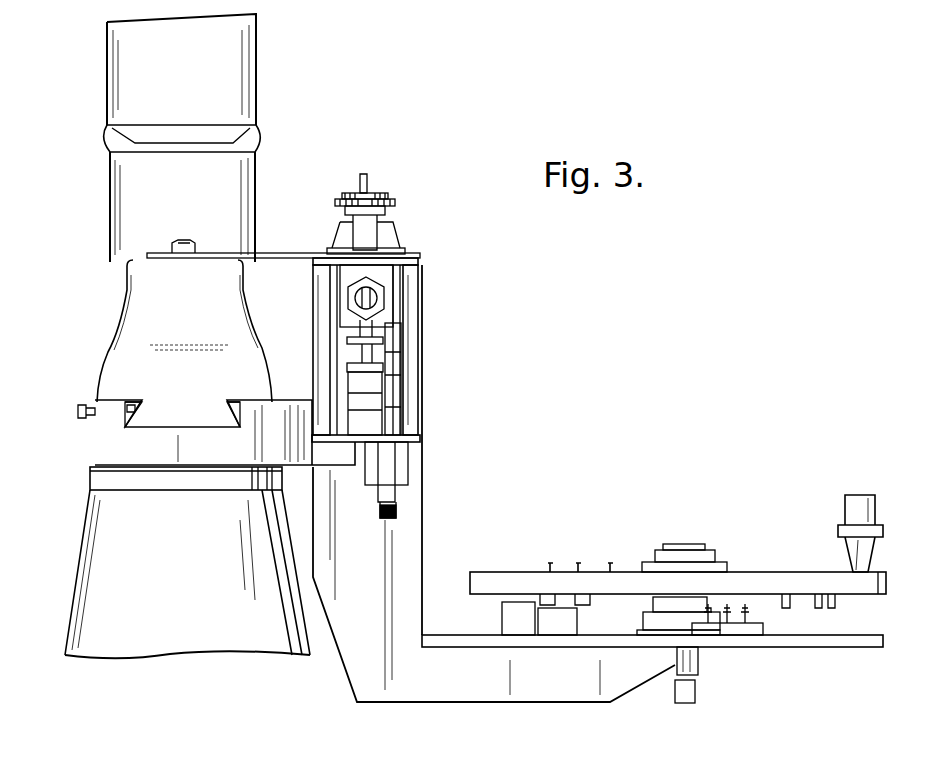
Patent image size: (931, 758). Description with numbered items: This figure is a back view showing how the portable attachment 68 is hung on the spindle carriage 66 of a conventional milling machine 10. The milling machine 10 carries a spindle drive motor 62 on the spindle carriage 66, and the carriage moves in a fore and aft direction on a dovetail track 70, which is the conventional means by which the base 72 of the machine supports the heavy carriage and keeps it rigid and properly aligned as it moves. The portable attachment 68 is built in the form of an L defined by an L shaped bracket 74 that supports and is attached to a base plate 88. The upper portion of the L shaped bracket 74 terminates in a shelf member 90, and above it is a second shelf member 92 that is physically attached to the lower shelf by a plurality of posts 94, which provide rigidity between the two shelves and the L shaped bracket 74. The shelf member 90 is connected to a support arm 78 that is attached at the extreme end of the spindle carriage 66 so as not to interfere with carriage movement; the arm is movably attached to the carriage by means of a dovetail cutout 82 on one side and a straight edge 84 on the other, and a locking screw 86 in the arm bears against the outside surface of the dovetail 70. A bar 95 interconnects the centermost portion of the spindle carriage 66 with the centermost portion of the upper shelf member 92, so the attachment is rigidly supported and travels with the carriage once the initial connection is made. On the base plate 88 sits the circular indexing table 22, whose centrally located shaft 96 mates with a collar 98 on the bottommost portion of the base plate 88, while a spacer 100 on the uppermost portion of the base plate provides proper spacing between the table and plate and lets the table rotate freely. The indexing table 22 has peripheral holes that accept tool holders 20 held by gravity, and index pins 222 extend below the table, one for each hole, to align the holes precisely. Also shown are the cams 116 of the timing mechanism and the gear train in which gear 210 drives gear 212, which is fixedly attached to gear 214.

The milling machine 10 is at (108, 208).
The spindle drive motor 62 is at (107, 67).
The spindle carriage 66 is at (108, 358).
The bar 95 is at (286, 252).
The dovetail track 70 is at (230, 415).
The straight edge 84 is at (130, 405).
The dovetail cutout 82 is at (238, 405).
The support arm 78 is at (298, 400).
The locking screw 86 is at (80, 410).
The base 72 is at (85, 530).
The second shelf member 92 is at (420, 258).
The posts 94 is at (318, 322).
The shelf member 90 is at (420, 440).
The cams 116 is at (368, 182).
The gear 212 is at (352, 198).
The gear 214 is at (395, 200).
The gear 210 is at (392, 208).
The L shaped bracket 74 is at (423, 565).
The portable attachment 68 is at (432, 490).
The base plate 88 is at (825, 648).
The collar 98 is at (700, 660).
The shaft 96 is at (698, 695).
The indexing table 22 is at (795, 572).
The spacer 100 is at (645, 625).
The index pins 222 is at (818, 605).
The tool holders 20 is at (848, 512).